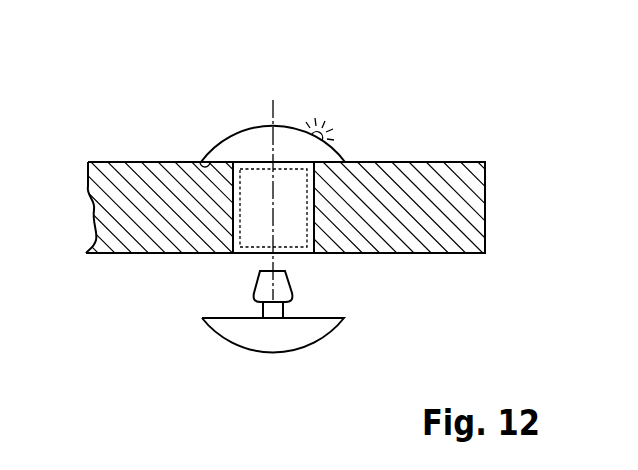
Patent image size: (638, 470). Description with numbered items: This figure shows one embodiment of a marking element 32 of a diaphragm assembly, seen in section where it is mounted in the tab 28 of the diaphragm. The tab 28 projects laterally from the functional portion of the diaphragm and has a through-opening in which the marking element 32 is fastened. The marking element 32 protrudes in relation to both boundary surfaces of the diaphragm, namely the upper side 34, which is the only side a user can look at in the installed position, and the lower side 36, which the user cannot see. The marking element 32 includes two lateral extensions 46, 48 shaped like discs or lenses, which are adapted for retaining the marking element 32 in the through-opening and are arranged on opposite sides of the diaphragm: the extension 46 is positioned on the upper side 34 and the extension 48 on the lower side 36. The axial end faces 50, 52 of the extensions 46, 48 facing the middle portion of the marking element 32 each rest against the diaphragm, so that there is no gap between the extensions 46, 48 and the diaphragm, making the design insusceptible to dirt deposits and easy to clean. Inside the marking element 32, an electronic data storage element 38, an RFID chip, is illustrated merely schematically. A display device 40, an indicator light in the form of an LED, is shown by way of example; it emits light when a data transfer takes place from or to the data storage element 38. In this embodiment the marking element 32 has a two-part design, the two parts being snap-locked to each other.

The tab 28 is at (453, 188).
The marking element 32 is at (298, 117).
The upper side 34 is at (130, 162).
The lower side 36 is at (108, 253).
The electronic data storage element 38 is at (240, 236).
The display device 40 is at (330, 115).
The lateral extension 46 is at (258, 145).
The lateral extension 48 is at (300, 330).
The axial end face 50 is at (199, 162).
The axial end face 52 is at (218, 318).